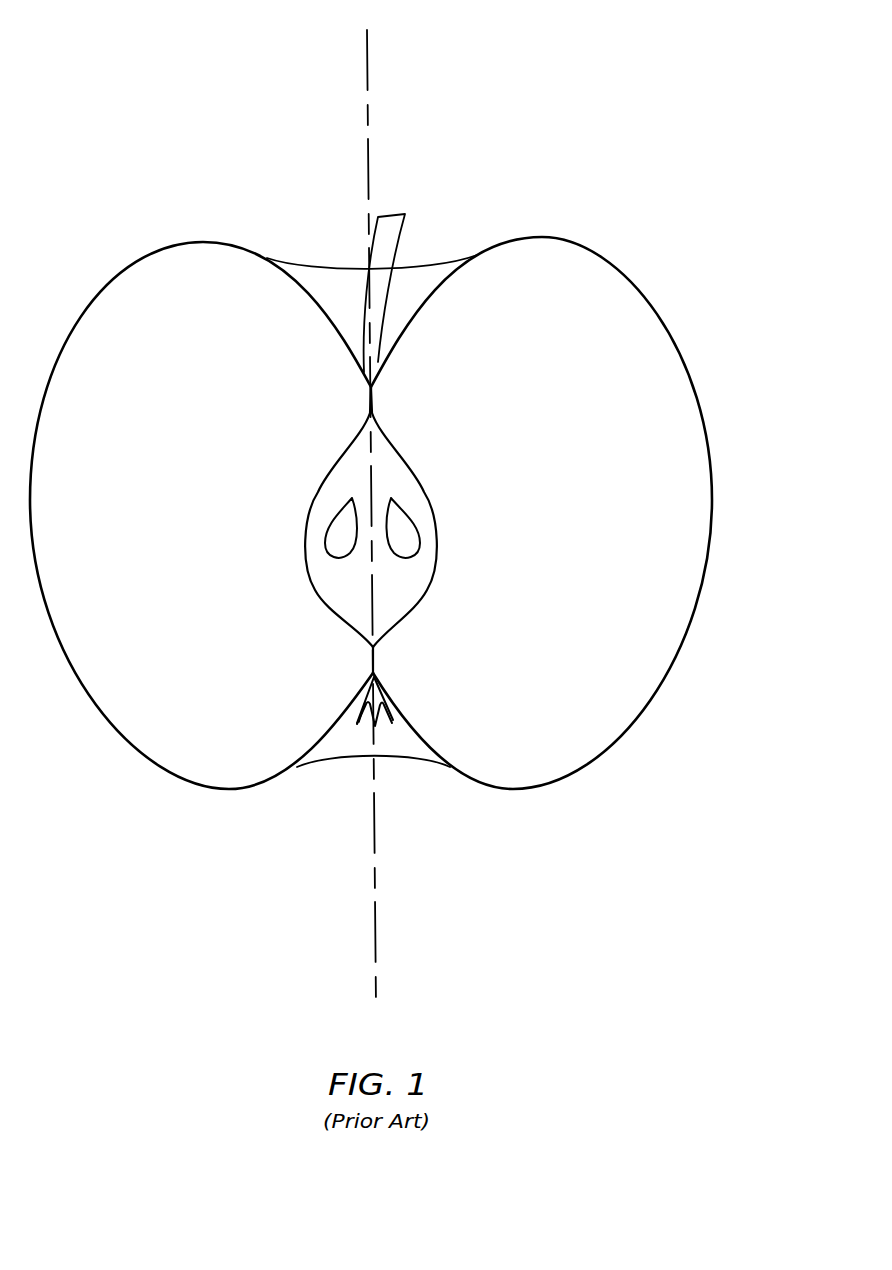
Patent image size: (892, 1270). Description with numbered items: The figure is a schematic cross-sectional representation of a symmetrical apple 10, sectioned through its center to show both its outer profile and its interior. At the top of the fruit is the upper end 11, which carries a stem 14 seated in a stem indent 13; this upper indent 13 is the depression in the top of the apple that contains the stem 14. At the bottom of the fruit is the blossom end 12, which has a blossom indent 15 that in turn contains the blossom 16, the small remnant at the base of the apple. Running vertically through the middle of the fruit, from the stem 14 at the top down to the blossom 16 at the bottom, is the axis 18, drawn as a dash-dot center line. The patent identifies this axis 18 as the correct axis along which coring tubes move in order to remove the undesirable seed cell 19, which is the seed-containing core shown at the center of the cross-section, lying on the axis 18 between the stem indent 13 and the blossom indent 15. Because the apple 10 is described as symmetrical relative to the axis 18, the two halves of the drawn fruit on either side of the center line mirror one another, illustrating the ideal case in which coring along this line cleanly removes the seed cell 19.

The apple 10 is at (618, 232).
The upper end 11 is at (418, 263).
The blossom end 12 is at (420, 763).
The stem indent 13 is at (423, 278).
The stem 14 is at (392, 210).
The blossom indent 15 is at (333, 748).
The blossom 16 is at (363, 740).
The axis 18 is at (376, 49).
The seed cell 19 is at (395, 487).